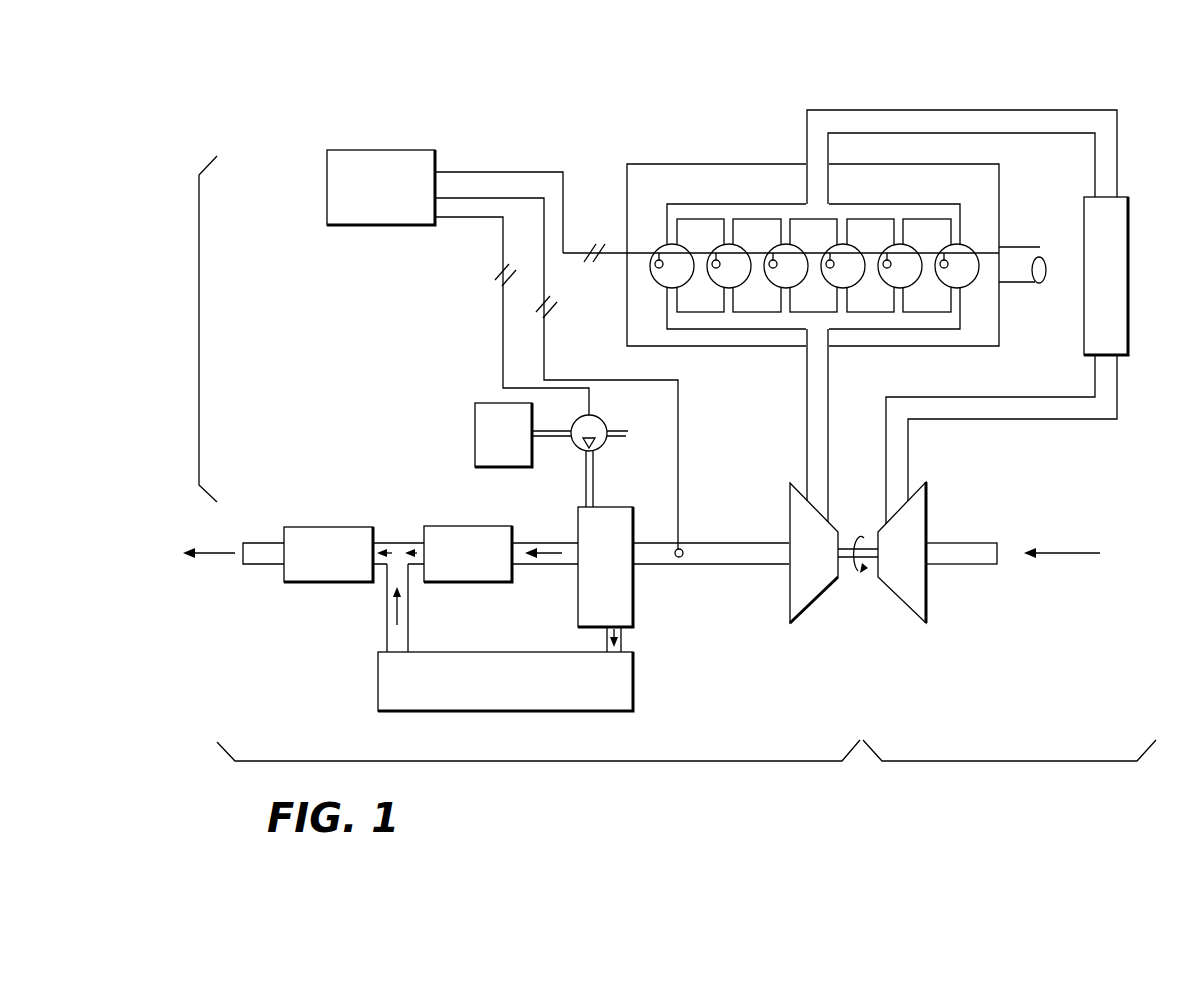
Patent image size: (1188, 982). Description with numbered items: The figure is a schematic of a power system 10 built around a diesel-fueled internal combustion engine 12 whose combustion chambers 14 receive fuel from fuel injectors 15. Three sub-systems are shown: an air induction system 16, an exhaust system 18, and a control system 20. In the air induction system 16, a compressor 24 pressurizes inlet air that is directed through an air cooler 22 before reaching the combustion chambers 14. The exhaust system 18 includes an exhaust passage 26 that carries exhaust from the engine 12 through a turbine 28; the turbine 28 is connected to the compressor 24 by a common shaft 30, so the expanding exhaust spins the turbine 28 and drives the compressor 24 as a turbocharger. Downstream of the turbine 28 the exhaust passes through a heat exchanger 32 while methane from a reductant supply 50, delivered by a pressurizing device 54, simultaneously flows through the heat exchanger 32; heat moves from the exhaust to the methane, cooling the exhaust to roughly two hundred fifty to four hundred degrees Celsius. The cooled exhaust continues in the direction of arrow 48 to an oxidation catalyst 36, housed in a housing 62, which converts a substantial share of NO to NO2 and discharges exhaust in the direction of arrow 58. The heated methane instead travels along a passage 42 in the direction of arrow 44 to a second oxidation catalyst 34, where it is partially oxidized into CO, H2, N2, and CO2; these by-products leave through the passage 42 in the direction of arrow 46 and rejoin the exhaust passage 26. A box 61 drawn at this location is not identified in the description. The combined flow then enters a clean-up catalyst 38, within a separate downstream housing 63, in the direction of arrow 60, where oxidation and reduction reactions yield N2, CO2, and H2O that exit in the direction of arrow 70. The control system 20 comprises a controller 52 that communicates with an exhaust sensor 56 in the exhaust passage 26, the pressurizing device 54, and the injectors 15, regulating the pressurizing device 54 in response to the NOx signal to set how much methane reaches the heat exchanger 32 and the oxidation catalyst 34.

The power system 10 is at (242, 114).
The internal combustion engine 12 is at (720, 164).
The combustion chambers 14 is at (970, 277).
The fuel injectors 15 is at (828, 260).
The air induction system 16 is at (1009, 761).
The exhaust system 18 is at (557, 761).
The control system 20 is at (199, 330).
The air cooler 22 is at (1130, 233).
The compressor 24 is at (927, 492).
The exhaust passage 26 is at (807, 392).
The turbine 28 is at (789, 492).
The common shaft 30 is at (872, 540).
The heat exchanger 32 is at (635, 590).
The oxidation catalyst 34 is at (619, 718).
The oxidation catalyst 36 is at (474, 516).
The clean-up catalyst 38 is at (332, 505).
The passage 42 is at (408, 608).
The arrow 44 is at (608, 633).
The arrow 46 is at (389, 607).
The arrow 48 is at (553, 556).
The reductant supply 50 is at (475, 413).
The controller 52 is at (405, 150).
The pressurizing device 54 is at (603, 420).
The exhaust sensor 56 is at (683, 552).
The arrow 58 is at (412, 548).
The arrow 60 is at (388, 558).
The reductant tank 61 is at (633, 682).
The housing 62 is at (490, 583).
The housing 63 is at (313, 582).
The arrow 70 is at (203, 557).